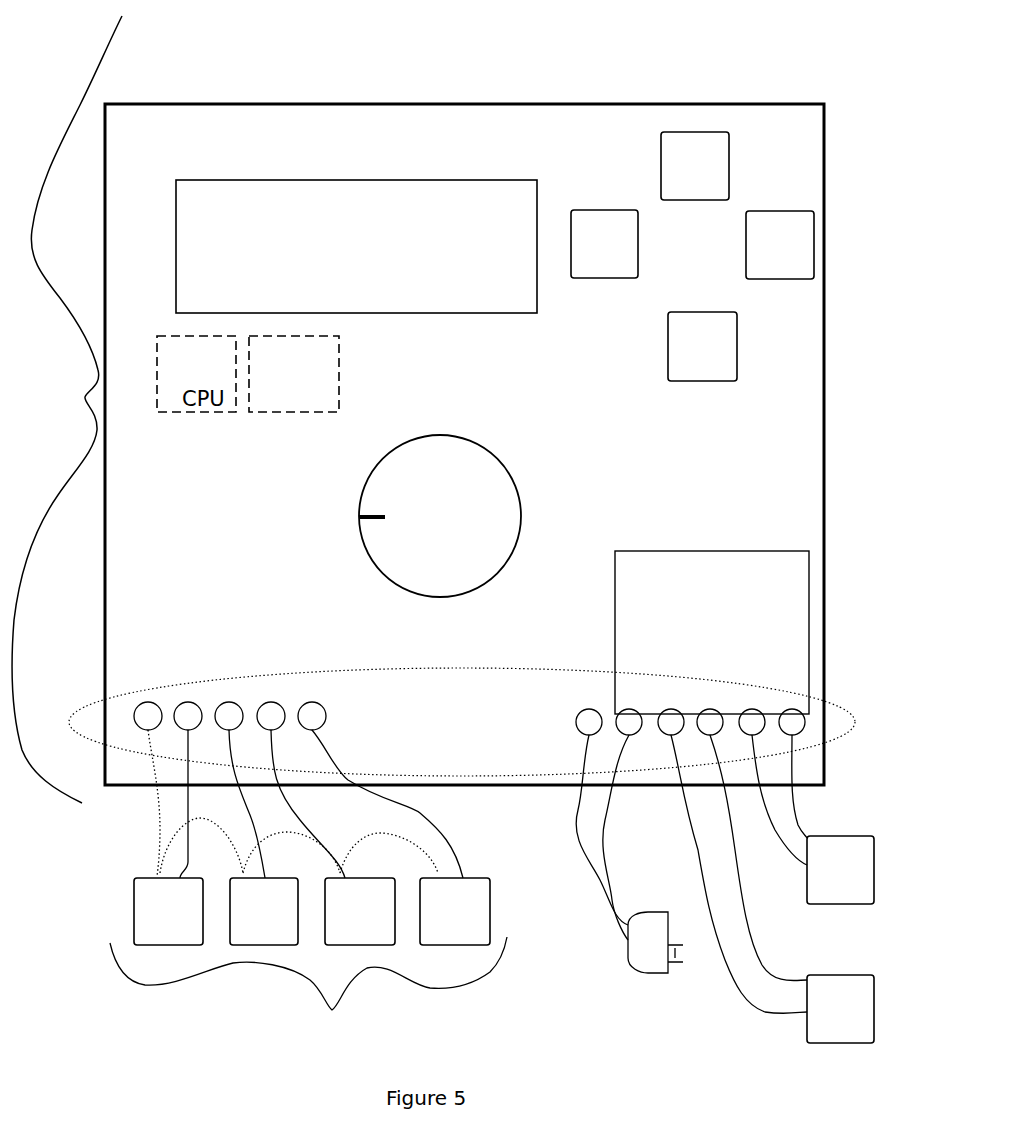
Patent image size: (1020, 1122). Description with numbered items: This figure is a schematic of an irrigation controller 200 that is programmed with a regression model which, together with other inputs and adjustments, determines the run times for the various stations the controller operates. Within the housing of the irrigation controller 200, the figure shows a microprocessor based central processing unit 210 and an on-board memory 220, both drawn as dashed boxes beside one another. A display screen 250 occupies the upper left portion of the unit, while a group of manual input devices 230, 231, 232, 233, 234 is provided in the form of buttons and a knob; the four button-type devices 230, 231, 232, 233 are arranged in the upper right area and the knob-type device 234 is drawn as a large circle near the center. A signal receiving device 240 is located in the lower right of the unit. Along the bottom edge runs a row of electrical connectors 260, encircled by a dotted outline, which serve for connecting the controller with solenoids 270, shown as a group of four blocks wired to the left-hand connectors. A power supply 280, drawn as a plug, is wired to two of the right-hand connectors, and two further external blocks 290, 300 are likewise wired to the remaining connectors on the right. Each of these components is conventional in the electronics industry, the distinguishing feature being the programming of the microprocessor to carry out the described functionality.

The irrigation controller 200 is at (67, 409).
The central processing unit 210 is at (157, 385).
The on-board memory 220 is at (274, 412).
The manual input device 230 is at (605, 210).
The manual input device 231 is at (700, 318).
The manual input device 232 is at (712, 132).
The manual input device 233 is at (768, 212).
The manual input device 234 is at (358, 532).
The signal receiving device 240 is at (810, 585).
The display screen 250 is at (222, 178).
The electrical connectors 260 is at (451, 722).
The solenoids 270 is at (308, 888).
The power supply 280 is at (627, 968).
The external device 290 is at (803, 890).
The external device 300 is at (803, 988).